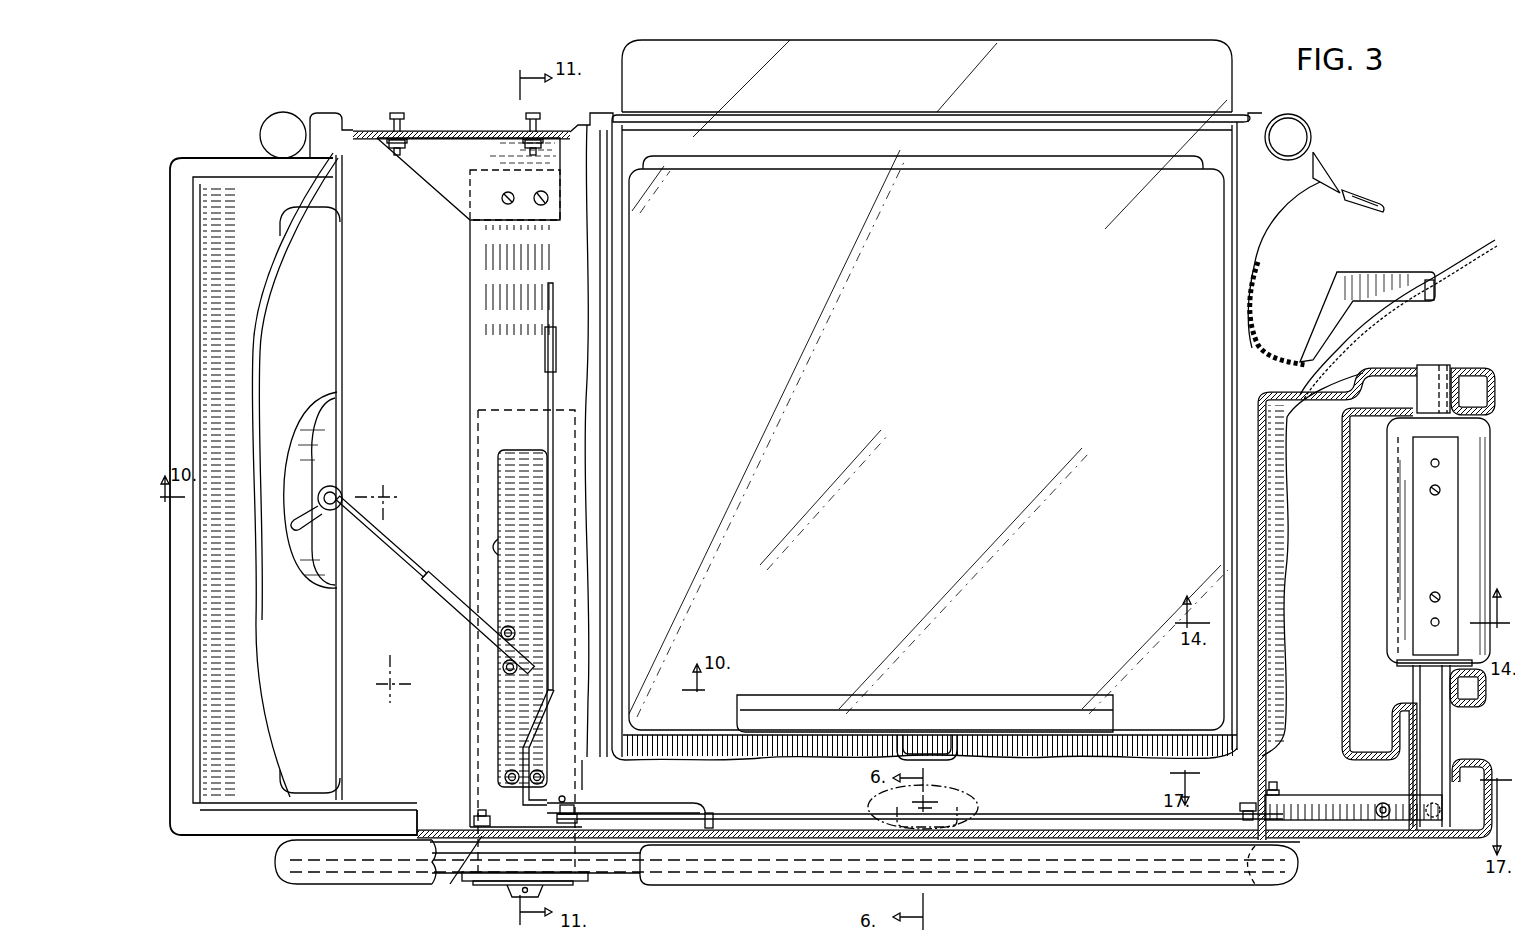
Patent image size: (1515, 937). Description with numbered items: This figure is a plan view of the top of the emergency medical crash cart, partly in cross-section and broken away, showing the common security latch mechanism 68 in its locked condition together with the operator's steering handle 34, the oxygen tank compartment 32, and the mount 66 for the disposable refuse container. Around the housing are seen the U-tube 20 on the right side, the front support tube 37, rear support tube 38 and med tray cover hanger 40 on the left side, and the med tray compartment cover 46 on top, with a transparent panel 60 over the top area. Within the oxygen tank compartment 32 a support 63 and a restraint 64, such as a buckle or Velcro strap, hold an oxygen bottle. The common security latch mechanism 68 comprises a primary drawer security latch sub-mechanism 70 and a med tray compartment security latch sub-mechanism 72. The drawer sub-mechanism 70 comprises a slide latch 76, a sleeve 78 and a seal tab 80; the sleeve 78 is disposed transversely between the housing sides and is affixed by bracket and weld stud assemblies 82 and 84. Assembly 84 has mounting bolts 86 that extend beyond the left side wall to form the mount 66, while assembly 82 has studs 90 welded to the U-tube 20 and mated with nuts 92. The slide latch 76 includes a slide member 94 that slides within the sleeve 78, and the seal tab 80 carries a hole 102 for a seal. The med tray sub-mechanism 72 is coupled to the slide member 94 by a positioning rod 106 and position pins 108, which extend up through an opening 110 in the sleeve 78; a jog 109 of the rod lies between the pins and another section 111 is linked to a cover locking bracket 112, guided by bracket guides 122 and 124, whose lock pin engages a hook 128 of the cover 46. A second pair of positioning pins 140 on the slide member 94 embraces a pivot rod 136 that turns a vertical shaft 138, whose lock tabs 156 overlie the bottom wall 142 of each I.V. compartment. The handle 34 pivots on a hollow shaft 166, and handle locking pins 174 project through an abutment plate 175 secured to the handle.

The U-tube 20 is at (1300, 872).
The oxygen tank compartment 32 is at (1280, 234).
The operator's steering handle 34 is at (1446, 358).
The front support tube 37 is at (285, 114).
The rear support tube 38 is at (1311, 130).
The med tray cover hanger 40 is at (1120, 110).
The med tray compartment cover 46 is at (1215, 90).
The transparent panel 60 is at (1225, 404).
The support 63 is at (1370, 282).
The restraint 64 is at (1480, 258).
The mount 66 is at (398, 112).
The common security latch mechanism 68 is at (462, 789).
The primary drawer security latch sub-mechanism 70 is at (582, 766).
The med tray compartment security latch sub-mechanism 72 is at (882, 803).
The slide latch 76 is at (512, 497).
The sleeve 78 is at (482, 248).
The seal tab 80 is at (552, 892).
The bracket and weld stud assembly 82 is at (508, 818).
The bracket and weld stud assembly 84 is at (450, 183).
The mounting bolts 86 is at (392, 150).
The studs 90 is at (474, 820).
The nuts 92 is at (459, 868).
The slide member 94 is at (553, 503).
The hole 102 is at (514, 897).
The positioning rod 106 is at (672, 805).
The position pins 108 is at (503, 771).
The jog 109 is at (540, 712).
The opening 110 is at (497, 547).
The section 111 is at (713, 814).
The cover locking bracket 112 is at (1040, 816).
The bracket guide 122 is at (578, 820).
The rear bracket guide 124 is at (1248, 803).
The hook 128 is at (960, 752).
The pivot rod 136 is at (408, 561).
The vertical shaft 138 is at (341, 493).
The positioning pins 140 is at (500, 634).
The bottom wall 142 is at (347, 420).
The lock tabs 156 is at (292, 521).
The hollow shaft 166 is at (1437, 372).
The handle locking pins 174 is at (1431, 464).
The abutment plate 175 is at (1420, 508).